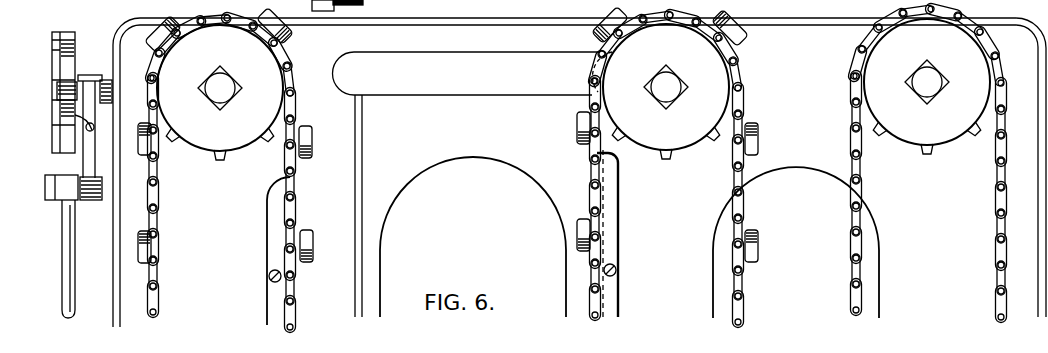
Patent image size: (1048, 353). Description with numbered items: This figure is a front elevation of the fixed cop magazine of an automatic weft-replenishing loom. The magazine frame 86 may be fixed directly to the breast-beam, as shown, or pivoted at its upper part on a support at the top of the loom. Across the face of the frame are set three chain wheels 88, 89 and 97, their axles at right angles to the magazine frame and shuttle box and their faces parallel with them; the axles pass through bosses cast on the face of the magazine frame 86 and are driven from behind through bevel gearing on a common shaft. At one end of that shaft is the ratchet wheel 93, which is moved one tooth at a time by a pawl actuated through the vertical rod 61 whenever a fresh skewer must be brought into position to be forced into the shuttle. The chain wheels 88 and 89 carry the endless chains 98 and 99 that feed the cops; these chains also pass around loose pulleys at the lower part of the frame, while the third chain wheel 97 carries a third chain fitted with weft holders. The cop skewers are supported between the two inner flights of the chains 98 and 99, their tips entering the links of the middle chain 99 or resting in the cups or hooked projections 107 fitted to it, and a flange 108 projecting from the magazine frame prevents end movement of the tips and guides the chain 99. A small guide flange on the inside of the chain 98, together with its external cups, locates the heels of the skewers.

The vertical rod 61 is at (66, 231).
The magazine frame 86 is at (579, 172).
The chain wheel 88 is at (219, 84).
The chain wheel 89 is at (670, 83).
The ratchet wheel 93 is at (62, 134).
The chain wheel 97 is at (927, 86).
The endless chain 98 is at (160, 194).
The endless chain 99 is at (656, 167).
The cups or hooked projections 107 is at (578, 142).
The flange 108 is at (600, 247).